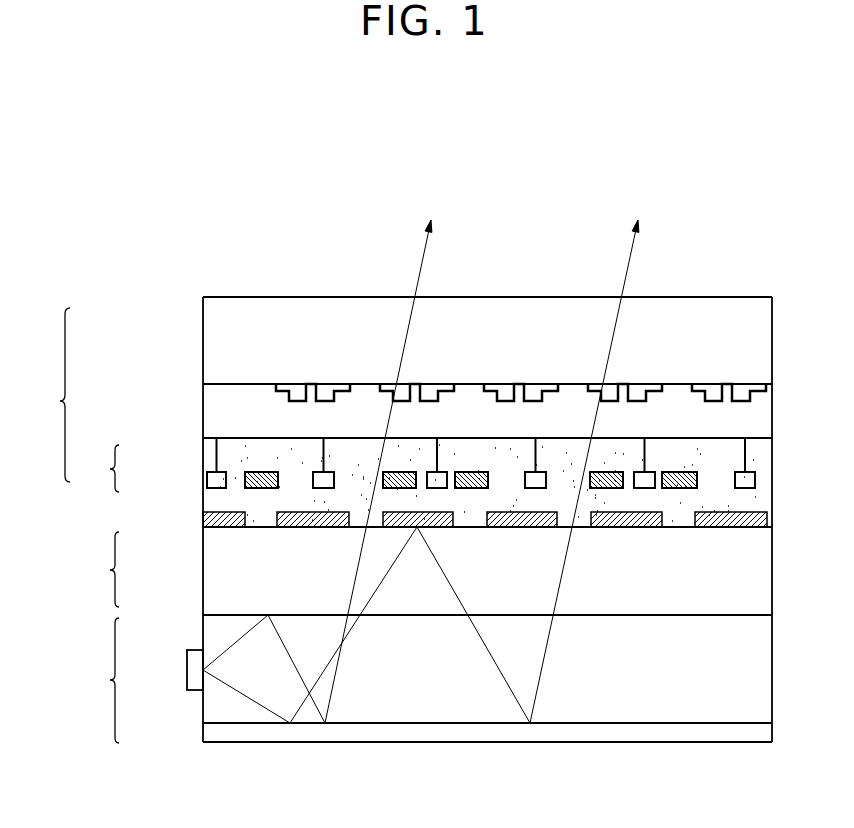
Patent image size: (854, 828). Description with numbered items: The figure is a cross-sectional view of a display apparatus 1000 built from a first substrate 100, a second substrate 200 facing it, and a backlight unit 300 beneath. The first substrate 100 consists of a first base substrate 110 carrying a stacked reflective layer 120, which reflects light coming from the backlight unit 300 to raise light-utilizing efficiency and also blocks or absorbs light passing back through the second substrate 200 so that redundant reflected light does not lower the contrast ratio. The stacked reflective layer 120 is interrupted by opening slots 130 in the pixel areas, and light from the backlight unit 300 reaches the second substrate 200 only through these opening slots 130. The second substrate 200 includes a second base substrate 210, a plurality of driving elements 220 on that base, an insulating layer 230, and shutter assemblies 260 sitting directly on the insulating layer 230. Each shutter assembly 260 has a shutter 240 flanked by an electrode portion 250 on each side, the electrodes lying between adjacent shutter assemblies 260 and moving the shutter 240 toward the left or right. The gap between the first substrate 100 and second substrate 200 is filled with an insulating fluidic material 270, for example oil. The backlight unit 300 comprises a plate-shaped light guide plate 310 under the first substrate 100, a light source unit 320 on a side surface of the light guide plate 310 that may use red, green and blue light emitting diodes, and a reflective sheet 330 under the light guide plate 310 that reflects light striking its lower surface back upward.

The display apparatus 1000 is at (357, 158).
The second substrate 200 is at (397, 389).
The second base substrate 210 is at (203, 316).
The driving element 220 is at (308, 387).
The insulating layer 230 is at (203, 410).
The shutter assembly 260 is at (414, 483).
The shutter 240 is at (250, 472).
The electrode portion 250 is at (207, 480).
The insulating fluidic material 270 is at (203, 503).
The first substrate 100 is at (95, 569).
The stacked reflective layer 120 is at (216, 527).
The opening slot 130 is at (259, 527).
The first base substrate 110 is at (203, 594).
The backlight unit 300 is at (355, 481).
The light guide plate 310 is at (203, 627).
The light source unit 320 is at (187, 668).
The reflective sheet 330 is at (203, 732).